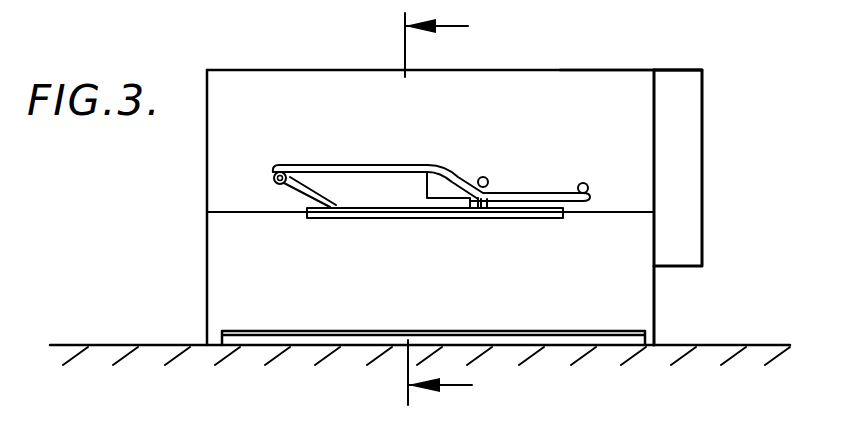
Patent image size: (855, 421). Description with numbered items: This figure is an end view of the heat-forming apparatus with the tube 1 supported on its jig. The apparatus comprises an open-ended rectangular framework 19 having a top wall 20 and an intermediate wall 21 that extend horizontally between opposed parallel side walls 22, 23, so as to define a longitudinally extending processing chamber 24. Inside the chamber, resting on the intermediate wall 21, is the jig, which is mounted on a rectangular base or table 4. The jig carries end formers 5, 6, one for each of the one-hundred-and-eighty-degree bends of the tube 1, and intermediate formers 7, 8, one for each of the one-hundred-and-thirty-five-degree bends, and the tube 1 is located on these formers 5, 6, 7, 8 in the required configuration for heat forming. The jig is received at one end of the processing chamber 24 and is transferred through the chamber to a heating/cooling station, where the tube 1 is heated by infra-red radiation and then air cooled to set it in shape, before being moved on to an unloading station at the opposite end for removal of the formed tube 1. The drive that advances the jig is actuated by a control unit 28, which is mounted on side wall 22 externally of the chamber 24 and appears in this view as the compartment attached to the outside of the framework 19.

The tube 1 is at (337, 165).
The rectangular base or table 4 is at (395, 212).
The end former 5 is at (273, 178).
The end former 6 is at (586, 182).
The intermediate former 7 is at (489, 178).
The intermediate former 8 is at (445, 178).
The open-ended rectangular framework 19 is at (445, 60).
The top wall 20 is at (264, 69).
The intermediate wall 21 is at (247, 213).
The side wall 22 is at (207, 296).
The side wall 23 is at (660, 306).
The processing chamber 24 is at (617, 83).
The control unit 28 is at (680, 195).